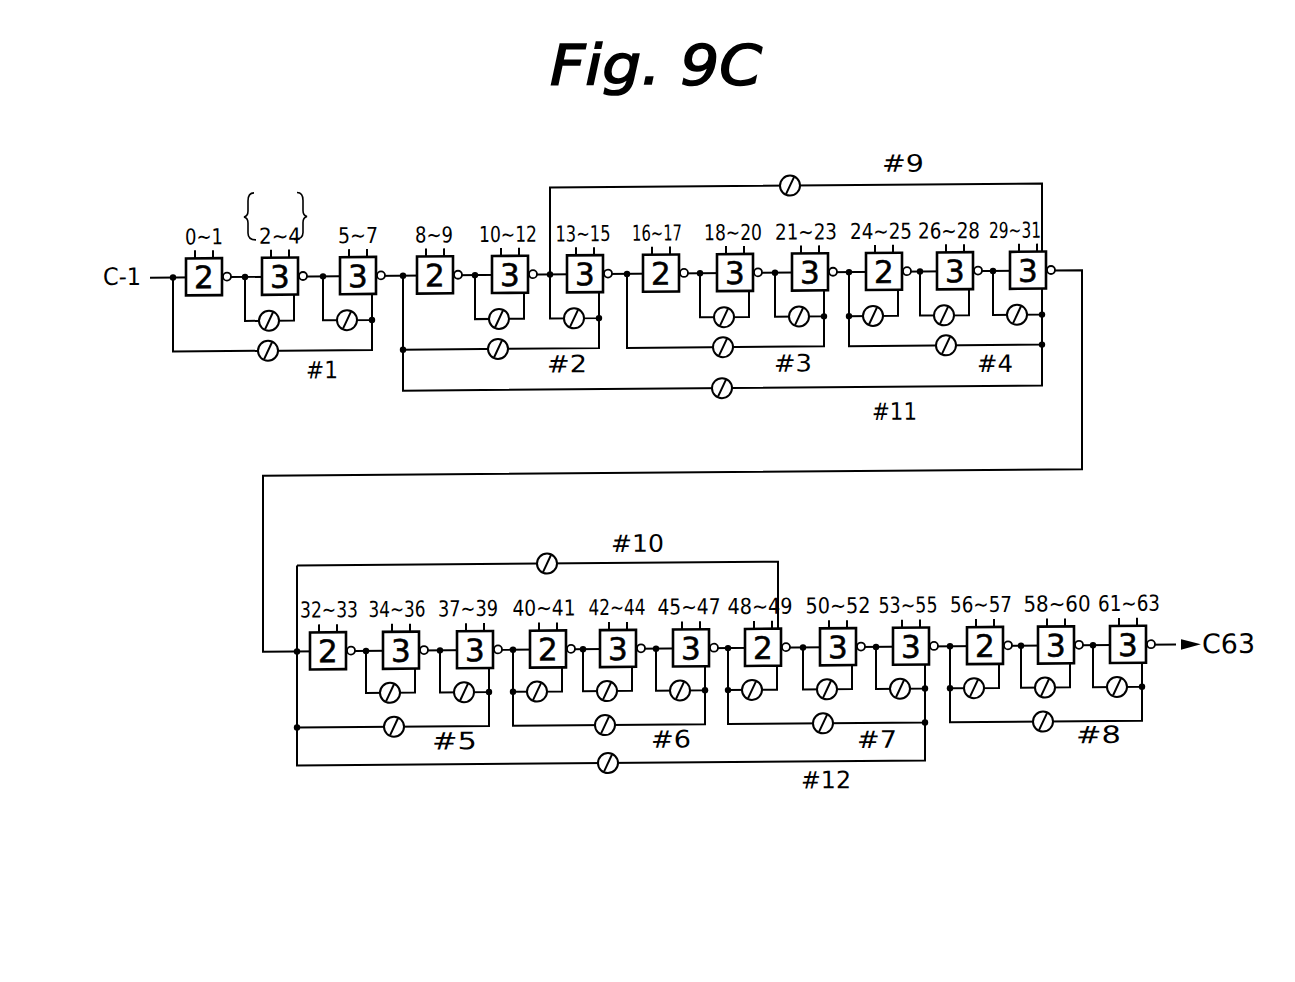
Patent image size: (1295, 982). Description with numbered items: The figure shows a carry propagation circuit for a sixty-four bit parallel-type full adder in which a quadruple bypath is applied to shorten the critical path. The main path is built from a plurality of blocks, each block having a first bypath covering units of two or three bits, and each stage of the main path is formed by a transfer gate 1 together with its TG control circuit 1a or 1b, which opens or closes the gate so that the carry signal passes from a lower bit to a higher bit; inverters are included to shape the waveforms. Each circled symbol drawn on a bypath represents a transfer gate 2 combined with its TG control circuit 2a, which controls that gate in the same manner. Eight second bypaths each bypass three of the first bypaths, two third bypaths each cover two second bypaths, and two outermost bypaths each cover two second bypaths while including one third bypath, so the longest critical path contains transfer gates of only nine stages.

The transfer gate 1 is at (257, 291).
The TG control circuit 1a is at (236, 216).
The TG control circuit 1b is at (312, 215).
The transfer gate 2 is at (257, 331).
The TG control circuit 2a is at (278, 367).